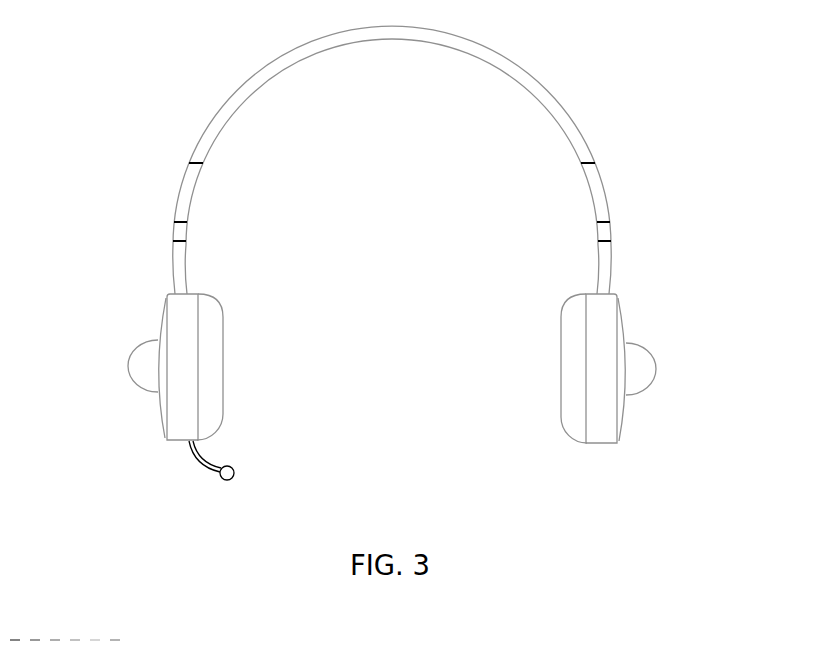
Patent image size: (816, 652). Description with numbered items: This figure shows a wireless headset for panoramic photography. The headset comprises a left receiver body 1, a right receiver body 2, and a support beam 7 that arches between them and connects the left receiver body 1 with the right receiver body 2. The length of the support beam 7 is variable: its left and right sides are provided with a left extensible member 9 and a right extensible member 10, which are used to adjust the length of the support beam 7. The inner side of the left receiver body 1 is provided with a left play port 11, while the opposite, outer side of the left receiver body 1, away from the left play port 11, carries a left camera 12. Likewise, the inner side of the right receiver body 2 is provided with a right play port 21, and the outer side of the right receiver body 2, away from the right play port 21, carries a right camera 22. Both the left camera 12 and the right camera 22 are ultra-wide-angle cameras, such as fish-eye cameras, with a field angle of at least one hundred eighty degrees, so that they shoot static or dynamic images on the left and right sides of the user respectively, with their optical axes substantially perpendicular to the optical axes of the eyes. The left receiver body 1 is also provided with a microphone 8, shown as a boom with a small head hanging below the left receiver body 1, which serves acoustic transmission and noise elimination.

The support beam 7 is at (553, 102).
The left extensible member 9 is at (192, 185).
The right extensible member 10 is at (596, 200).
The left play port 11 is at (182, 381).
The left camera 12 is at (140, 376).
The left receiver body 1 is at (185, 441).
The microphone boom 8 is at (220, 479).
The right play port 21 is at (601, 390).
The right camera 22 is at (648, 368).
The right receiver body 2 is at (598, 441).